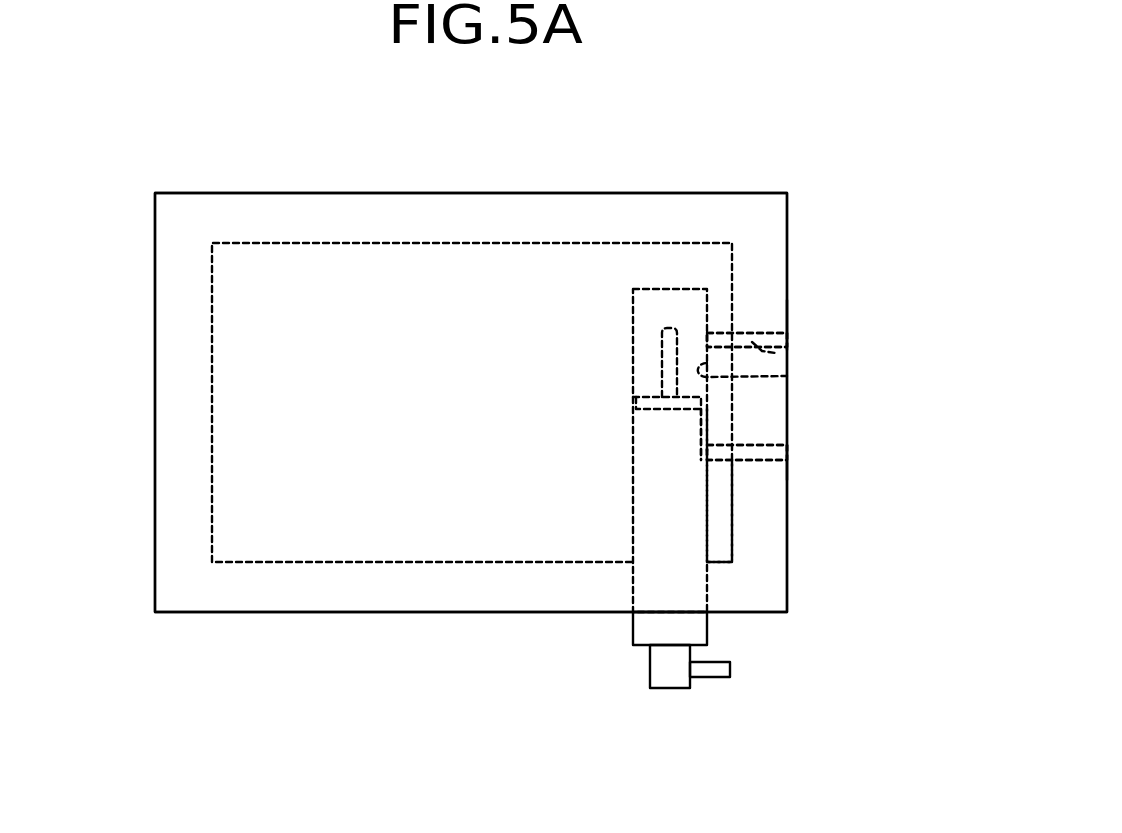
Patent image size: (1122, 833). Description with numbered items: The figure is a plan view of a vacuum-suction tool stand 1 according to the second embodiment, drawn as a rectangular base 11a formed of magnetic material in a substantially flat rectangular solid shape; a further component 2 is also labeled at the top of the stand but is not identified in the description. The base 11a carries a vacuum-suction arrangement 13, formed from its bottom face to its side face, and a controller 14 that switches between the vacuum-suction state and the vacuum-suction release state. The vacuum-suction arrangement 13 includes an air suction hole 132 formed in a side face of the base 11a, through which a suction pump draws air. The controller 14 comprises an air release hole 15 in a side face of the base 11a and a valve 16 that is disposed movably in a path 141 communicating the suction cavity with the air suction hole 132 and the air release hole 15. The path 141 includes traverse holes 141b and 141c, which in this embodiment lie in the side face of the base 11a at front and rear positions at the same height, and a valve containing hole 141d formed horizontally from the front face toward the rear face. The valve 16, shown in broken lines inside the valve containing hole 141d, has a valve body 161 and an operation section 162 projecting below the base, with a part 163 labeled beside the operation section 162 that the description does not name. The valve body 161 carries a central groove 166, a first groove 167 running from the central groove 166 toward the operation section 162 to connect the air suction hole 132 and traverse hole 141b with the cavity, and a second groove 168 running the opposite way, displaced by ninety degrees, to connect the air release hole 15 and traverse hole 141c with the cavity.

The vacuum-suction tool stand 1 is at (660, 168).
The housing 2 is at (276, 168).
The base 11a is at (356, 548).
The vacuum-suction arrangement 13 is at (743, 468).
The controller 14 is at (712, 527).
The air release hole 15 is at (787, 343).
The valve 16 is at (628, 647).
The air suction hole 132 is at (787, 455).
The path 141 is at (877, 319).
The traverse hole 141b is at (760, 440).
The traverse hole 141c is at (792, 347).
The valve containing hole 141d is at (787, 376).
The valve body 161 is at (650, 540).
The operation section 162 is at (673, 672).
The connector terminal 163 is at (730, 670).
The central groove 166 is at (641, 411).
The first groove 167 is at (699, 433).
The second groove 168 is at (669, 352).